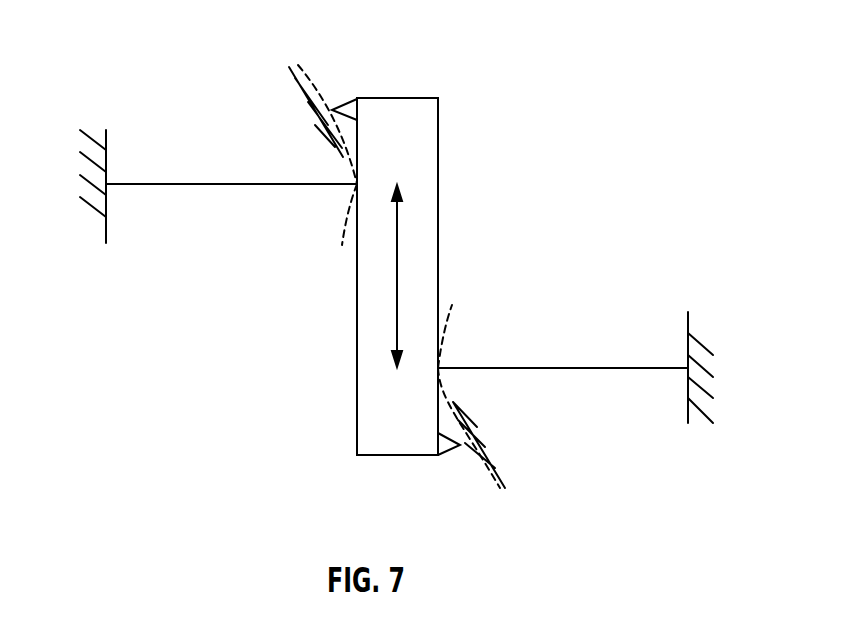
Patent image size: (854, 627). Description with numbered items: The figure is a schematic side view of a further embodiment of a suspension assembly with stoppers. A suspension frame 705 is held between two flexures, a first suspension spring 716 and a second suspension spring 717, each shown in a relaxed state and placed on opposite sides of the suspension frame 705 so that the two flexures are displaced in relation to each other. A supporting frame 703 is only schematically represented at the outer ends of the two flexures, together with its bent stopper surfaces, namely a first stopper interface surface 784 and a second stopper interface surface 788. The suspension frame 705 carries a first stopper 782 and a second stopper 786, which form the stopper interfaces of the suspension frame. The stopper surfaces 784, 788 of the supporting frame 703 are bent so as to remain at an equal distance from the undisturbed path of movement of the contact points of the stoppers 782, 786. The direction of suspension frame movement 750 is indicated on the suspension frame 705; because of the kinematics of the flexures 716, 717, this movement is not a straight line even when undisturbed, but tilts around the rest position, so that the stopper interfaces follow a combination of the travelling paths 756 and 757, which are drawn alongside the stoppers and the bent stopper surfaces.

The supporting frame 703 is at (103, 232).
The suspension frame 705 is at (432, 133).
The first suspension spring 716 is at (168, 183).
The second suspension spring 717 is at (585, 367).
The direction of suspension frame movement 750 is at (398, 263).
The travelling path of the stopper interfaces 756 is at (342, 245).
The travelling path of the stopper interfaces 757 is at (448, 323).
The first stopper 782 is at (334, 108).
The first stopper interface surface 784 is at (300, 68).
The second stopper 786 is at (455, 448).
The second stopper interface surface 788 is at (495, 488).